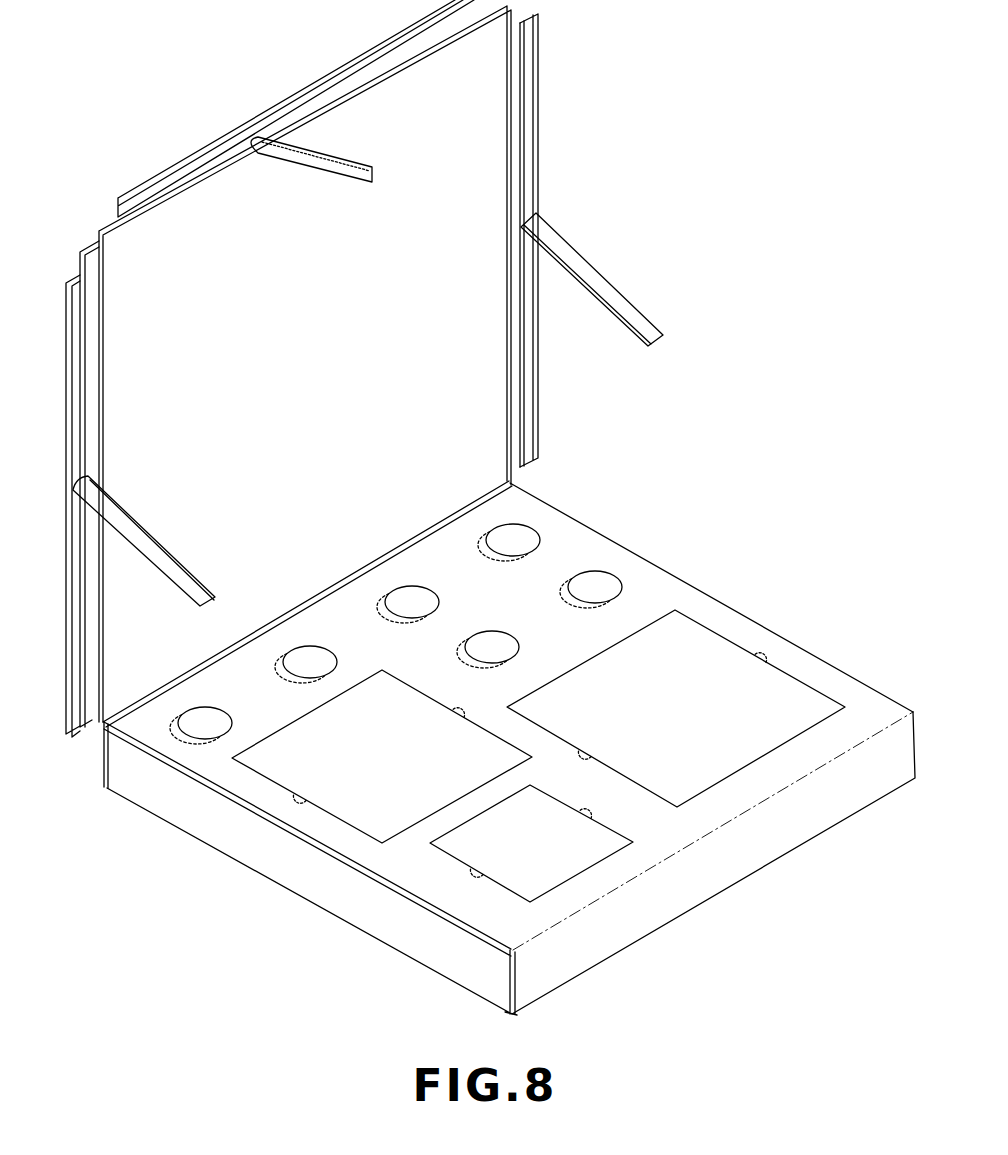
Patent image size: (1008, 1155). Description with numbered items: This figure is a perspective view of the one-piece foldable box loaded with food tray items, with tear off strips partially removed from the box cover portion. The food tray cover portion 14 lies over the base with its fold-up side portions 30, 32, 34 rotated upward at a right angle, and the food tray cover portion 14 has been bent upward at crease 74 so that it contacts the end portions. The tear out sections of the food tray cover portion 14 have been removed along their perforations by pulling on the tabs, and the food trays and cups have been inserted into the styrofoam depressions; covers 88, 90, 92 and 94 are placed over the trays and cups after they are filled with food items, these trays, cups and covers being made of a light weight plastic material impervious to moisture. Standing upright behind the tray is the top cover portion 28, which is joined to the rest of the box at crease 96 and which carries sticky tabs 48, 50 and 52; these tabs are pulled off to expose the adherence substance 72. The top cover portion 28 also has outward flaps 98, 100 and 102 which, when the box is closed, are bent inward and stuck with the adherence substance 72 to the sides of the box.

The food tray cover portion 14 is at (660, 583).
The top cover portion 28 is at (313, 352).
The side portion 30 is at (655, 916).
The side portion 32 is at (317, 890).
The side portion 34 is at (103, 757).
The sticky tab 48 is at (193, 575).
The sticky tab 50 is at (353, 170).
The sticky tab 52 is at (643, 322).
The adherence substance 72 is at (170, 185).
The crease 74 is at (758, 808).
The cover 88 is at (549, 852).
The cover 90 is at (388, 774).
The cover 92 is at (629, 747).
The cover 94 is at (513, 528).
The crease 96 is at (355, 568).
The outward flap 98 is at (65, 356).
The outward flap 100 is at (297, 90).
The outward flap 102 is at (540, 170).